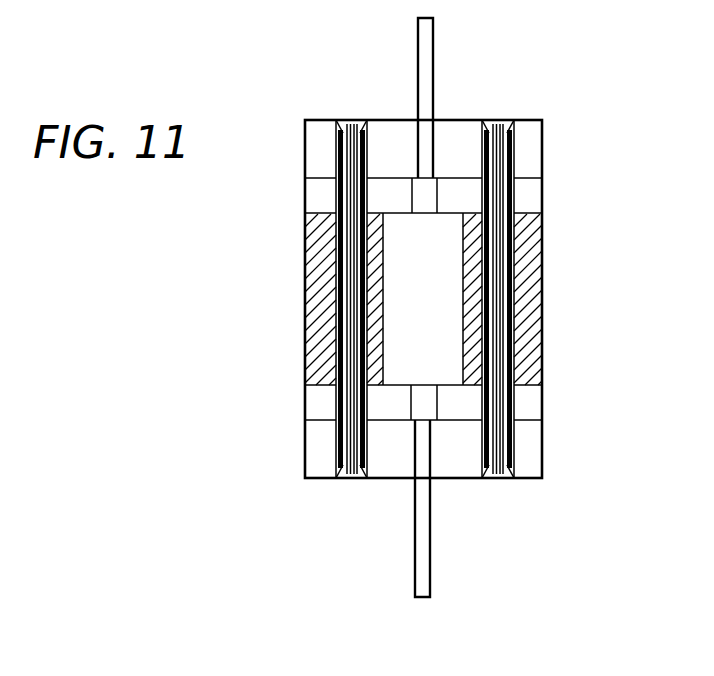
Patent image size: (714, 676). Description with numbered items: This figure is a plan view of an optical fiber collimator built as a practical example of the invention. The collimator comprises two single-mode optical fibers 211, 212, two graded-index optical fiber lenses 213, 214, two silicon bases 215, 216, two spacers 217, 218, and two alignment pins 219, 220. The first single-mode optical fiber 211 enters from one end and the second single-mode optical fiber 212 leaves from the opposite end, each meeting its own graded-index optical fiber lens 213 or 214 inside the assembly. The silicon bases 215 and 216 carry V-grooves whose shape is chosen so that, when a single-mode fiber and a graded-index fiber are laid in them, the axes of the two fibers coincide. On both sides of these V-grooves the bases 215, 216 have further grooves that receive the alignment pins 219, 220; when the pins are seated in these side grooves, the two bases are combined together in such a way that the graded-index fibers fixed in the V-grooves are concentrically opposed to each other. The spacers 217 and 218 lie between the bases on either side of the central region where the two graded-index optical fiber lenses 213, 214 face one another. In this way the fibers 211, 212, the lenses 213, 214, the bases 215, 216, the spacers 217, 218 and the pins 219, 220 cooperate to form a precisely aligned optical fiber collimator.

The single-mode optical fiber 211 is at (427, 53).
The single-mode optical fiber 212 is at (420, 571).
The graded-index optical fiber lens 213 is at (418, 198).
The graded-index optical fiber lens 214 is at (428, 407).
The silicon base 215 is at (532, 150).
The silicon base 216 is at (532, 450).
The spacer 217 is at (317, 280).
The spacer 218 is at (535, 280).
The alignment pin 219 is at (362, 480).
The alignment pin 220 is at (508, 482).